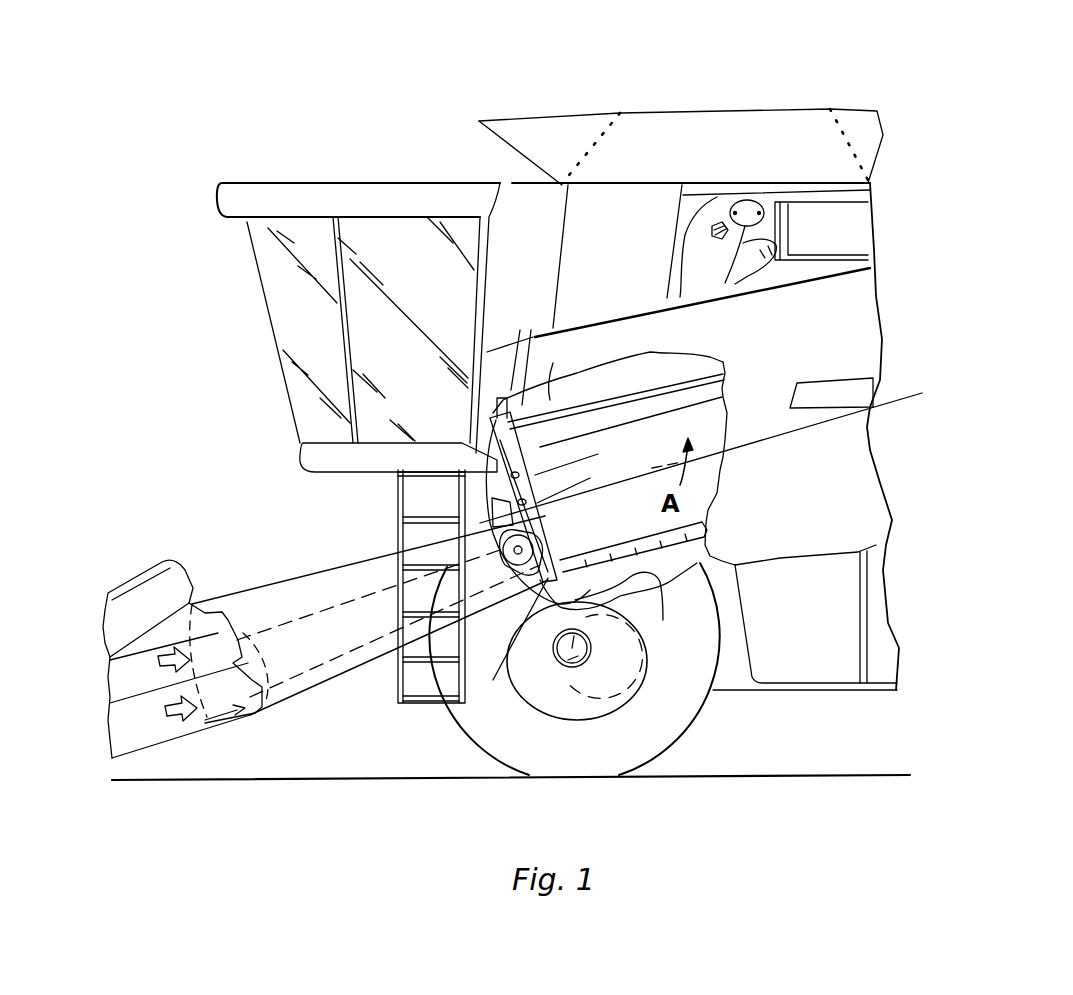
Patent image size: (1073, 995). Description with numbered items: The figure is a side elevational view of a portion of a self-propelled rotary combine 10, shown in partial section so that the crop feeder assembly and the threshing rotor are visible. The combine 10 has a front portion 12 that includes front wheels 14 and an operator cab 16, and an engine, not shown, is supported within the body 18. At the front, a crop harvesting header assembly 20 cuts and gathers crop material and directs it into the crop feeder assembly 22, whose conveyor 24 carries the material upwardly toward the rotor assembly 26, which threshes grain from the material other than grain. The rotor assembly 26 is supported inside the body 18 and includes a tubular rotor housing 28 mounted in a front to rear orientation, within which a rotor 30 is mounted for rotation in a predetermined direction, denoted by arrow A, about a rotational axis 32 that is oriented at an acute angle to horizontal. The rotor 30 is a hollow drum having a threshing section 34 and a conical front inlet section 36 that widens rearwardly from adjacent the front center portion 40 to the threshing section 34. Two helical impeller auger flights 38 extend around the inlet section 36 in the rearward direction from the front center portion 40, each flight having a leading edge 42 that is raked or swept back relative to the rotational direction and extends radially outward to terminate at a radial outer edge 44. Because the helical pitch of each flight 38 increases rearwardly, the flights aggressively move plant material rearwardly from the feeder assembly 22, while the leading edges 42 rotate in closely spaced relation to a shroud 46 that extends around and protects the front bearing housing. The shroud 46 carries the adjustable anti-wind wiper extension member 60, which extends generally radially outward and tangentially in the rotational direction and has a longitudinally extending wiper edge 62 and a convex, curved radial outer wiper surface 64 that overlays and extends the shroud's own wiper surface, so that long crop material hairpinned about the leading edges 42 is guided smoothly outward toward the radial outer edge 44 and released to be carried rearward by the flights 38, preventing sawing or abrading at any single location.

The self-propelled rotary combine 10 is at (940, 132).
The front portion 12 is at (500, 327).
The front wheels 14 is at (711, 722).
The operator cab 16 is at (342, 182).
The body 18 is at (836, 472).
The crop harvesting header assembly 20 is at (217, 608).
The crop feeder assembly 22 is at (360, 666).
The conveyor 24 is at (348, 597).
The rotor assembly 26 is at (618, 415).
The tubular rotor housing 28 is at (623, 589).
The rotor 30 is at (730, 384).
The rotational axis 32 is at (917, 402).
The threshing section 34 is at (702, 362).
The front inlet section 36 is at (556, 369).
The helical impeller auger flights 38 is at (522, 338).
The front center portion 40 is at (590, 478).
The leading edge 42 is at (510, 593).
The radial outer edge 44 is at (509, 645).
The shroud 46 is at (490, 522).
The adjustable anti-wind wiper extension member 60 is at (490, 465).
The wiper edge 62 is at (598, 454).
The radial outer wiper surface 64 is at (500, 445).